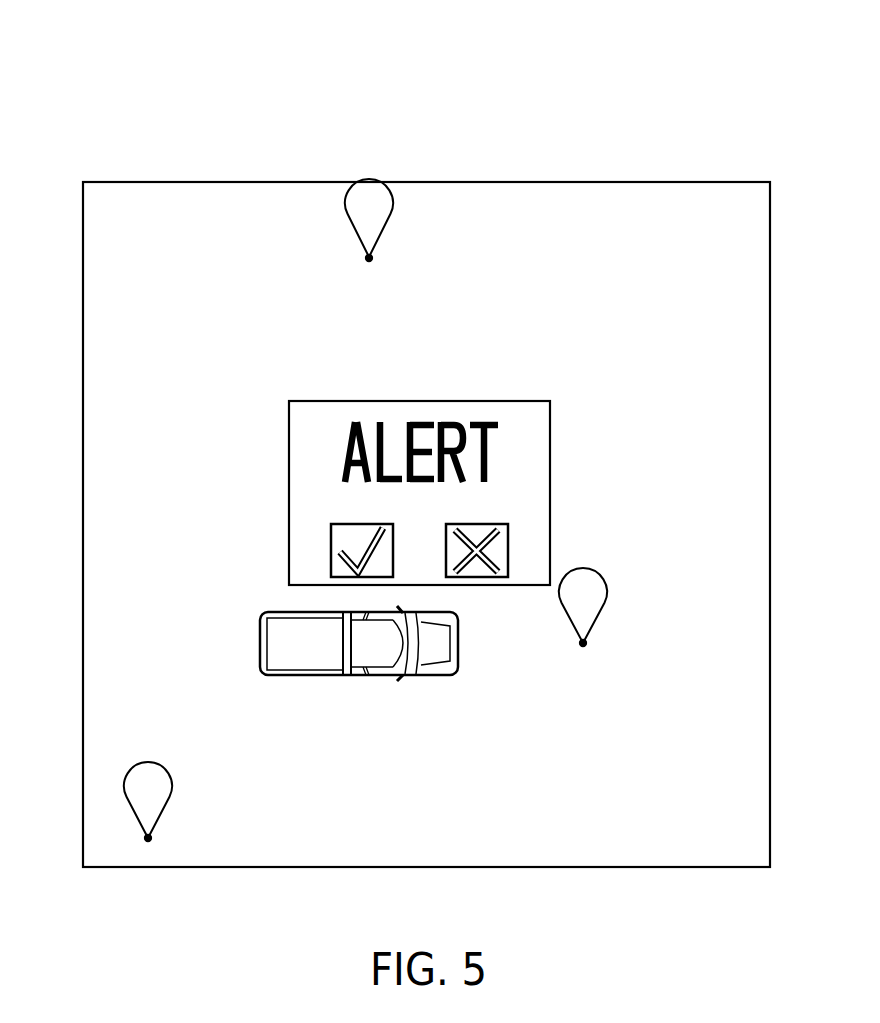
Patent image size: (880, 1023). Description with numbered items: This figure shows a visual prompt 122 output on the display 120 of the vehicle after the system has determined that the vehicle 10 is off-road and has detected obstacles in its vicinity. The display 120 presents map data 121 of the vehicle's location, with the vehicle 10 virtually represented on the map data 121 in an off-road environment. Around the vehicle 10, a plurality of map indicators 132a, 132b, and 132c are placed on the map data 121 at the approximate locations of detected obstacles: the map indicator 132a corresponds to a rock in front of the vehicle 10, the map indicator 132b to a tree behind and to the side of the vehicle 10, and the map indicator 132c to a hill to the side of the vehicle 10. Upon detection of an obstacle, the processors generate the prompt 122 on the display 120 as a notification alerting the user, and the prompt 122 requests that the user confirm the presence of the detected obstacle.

The display 120 is at (117, 133).
The map data 121 is at (183, 198).
The visual prompt 122 is at (417, 401).
The map indicator 132a is at (583, 568).
The map indicator 132b is at (148, 762).
The map indicator 132c is at (395, 208).
The vehicle 10 is at (260, 645).